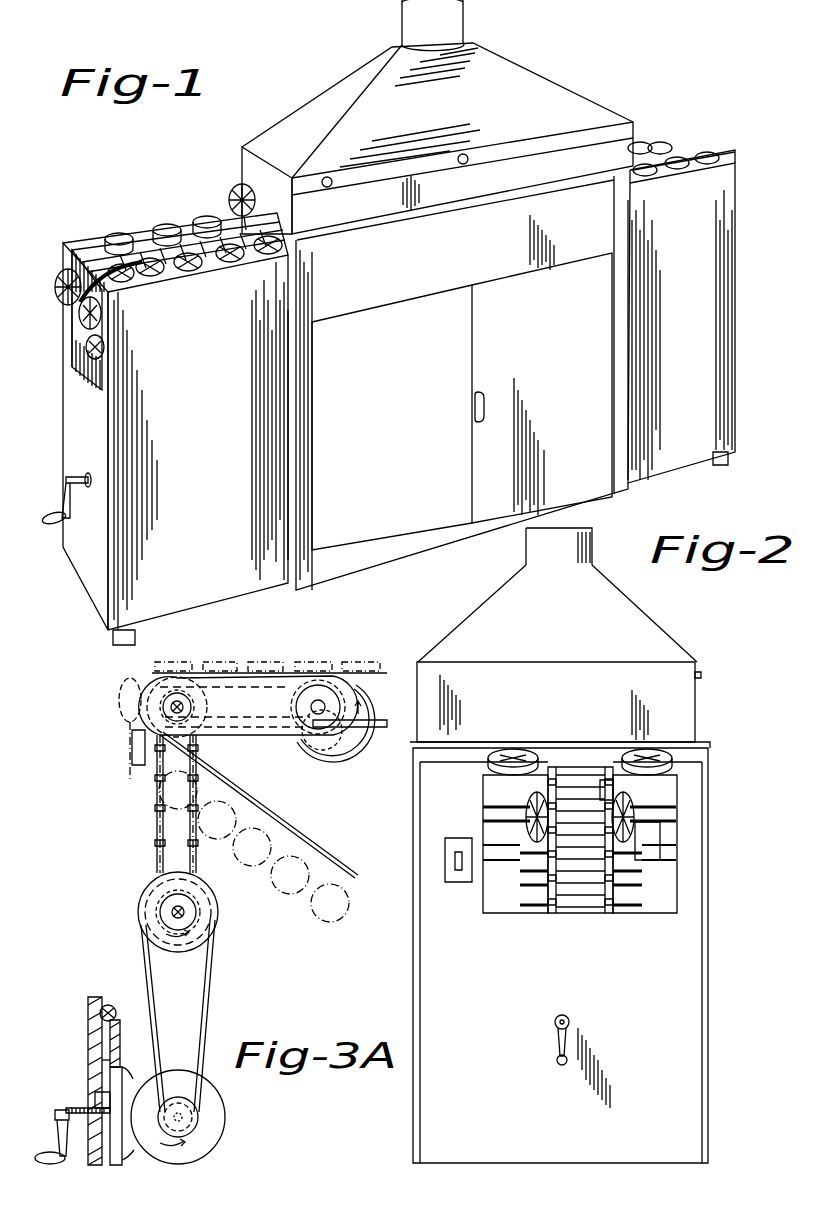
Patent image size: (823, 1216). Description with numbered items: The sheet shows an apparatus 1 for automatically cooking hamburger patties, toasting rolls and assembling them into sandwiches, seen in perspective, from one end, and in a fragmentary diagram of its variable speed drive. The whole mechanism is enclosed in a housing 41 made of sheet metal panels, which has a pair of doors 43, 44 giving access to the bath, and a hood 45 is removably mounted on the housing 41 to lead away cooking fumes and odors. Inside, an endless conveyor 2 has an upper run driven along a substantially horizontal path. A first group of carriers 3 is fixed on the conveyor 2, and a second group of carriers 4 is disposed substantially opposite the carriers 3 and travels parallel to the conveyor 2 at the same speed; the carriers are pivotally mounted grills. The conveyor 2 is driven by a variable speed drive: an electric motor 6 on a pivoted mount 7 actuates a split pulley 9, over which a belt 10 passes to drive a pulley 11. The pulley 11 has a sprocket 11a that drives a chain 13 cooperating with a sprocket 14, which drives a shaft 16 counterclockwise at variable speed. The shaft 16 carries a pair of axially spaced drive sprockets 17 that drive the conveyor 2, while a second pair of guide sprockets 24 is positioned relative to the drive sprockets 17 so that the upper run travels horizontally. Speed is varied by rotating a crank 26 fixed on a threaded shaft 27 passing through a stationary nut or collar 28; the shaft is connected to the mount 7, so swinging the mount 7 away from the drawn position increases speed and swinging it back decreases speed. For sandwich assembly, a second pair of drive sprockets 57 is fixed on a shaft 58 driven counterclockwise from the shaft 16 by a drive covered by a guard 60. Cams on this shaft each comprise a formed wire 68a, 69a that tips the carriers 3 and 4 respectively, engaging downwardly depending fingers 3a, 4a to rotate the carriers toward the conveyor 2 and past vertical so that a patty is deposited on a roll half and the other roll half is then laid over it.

In FIG. 1, the apparatus 1 is at (640, 108).
In FIG. 2, the apparatus 1 is at (405, 778).
In FIG. 1, the endless conveyor 2 is at (163, 268).
In FIG. 2, the endless conveyor 2 is at (580, 800).
In FIG. 3A, the endless conveyor 2 is at (287, 815).
In FIG. 1, the first group of carriers 3 is at (197, 222).
In FIG. 2, the first group of carriers 3 is at (510, 750).
In FIG. 2, the downwardly depending extension or finger 3a is at (520, 890).
In FIG. 1, the second group of carriers 4 is at (258, 262).
In FIG. 2, the second group of carriers 4 is at (662, 752).
In FIG. 3A, the second group of carriers 4 is at (273, 875).
In FIG. 2, the downwardly depending extension or finger 4a is at (622, 900).
In FIG. 3A, the electric motor 6 is at (214, 1095).
In FIG. 3A, the pivoted motor mount 7 is at (118, 1070).
In FIG. 3A, the split pulley 9 is at (203, 1122).
In FIG. 3A, the belt 10 is at (209, 988).
In FIG. 3A, the pulley 11 is at (206, 914).
In FIG. 3A, the sprocket 11a is at (196, 928).
In FIG. 3A, the chain 13 is at (157, 832).
In FIG. 3A, the sprocket 14 is at (150, 722).
In FIG. 2, the shaft 16 is at (672, 810).
In FIG. 3A, the shaft 16 is at (163, 713).
In FIG. 1, the drive sprockets 17 is at (92, 262).
In FIG. 2, the drive sprockets 17 is at (607, 790).
In FIG. 3A, the drive sprockets 17 is at (205, 695).
In FIG. 1, the second pair of guide sprockets 24 is at (708, 160).
In FIG. 1, the crank 26 is at (58, 513).
In FIG. 2, the crank 26 is at (556, 1062).
In FIG. 3A, the crank 26 is at (52, 1152).
In FIG. 1, the threaded shaft 27 is at (82, 472).
In FIG. 3A, the threaded shaft 27 is at (68, 1109).
In FIG. 3A, the threaded stationary nut or collar 28 is at (105, 1098).
In FIG. 1, the housing 41 is at (222, 598).
In FIG. 2, the housing 41 is at (698, 1085).
In FIG. 3A, the housing 41 is at (88, 1013).
In FIG. 1, the door 43 is at (386, 553).
In FIG. 1, the door 44 is at (575, 490).
In FIG. 1, the hood 45 is at (530, 76).
In FIG. 2, the hood 45 is at (486, 588).
In FIG. 3A, the second pair of drive sprockets 57 is at (302, 737).
In FIG. 3A, the shaft 58 is at (313, 705).
In FIG. 3A, the guard 60 is at (238, 738).
In FIG. 3A, the formed wire cam 68a is at (341, 762).
In FIG. 3A, the formed wire cam 69a is at (370, 693).